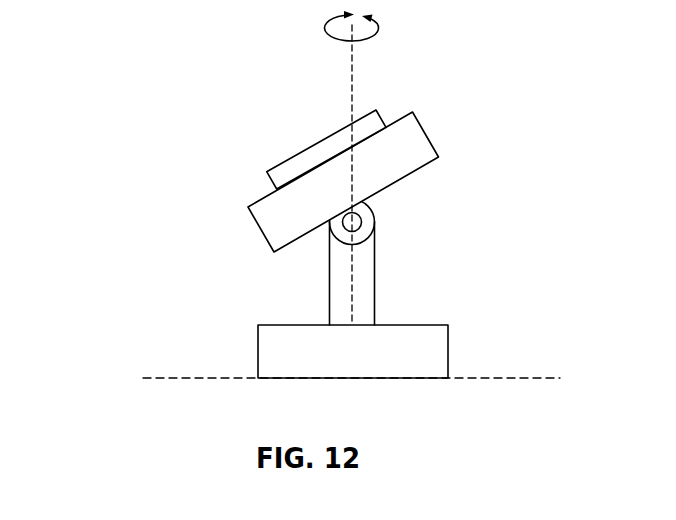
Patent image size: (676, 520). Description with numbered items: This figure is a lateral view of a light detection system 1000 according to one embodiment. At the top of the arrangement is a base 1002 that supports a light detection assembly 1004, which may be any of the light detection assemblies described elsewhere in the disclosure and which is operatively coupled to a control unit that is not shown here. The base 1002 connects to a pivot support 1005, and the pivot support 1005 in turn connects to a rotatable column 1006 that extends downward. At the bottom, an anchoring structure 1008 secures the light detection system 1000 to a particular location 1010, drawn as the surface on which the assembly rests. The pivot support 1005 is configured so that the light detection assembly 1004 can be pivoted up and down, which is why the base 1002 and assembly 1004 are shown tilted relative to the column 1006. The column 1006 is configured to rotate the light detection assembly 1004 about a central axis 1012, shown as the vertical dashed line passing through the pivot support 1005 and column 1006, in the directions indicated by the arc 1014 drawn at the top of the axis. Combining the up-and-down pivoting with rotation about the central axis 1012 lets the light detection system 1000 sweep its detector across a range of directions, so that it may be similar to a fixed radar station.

The light detection system 1000 is at (182, 93).
The base 1002 is at (425, 133).
The light detection assembly 1004 is at (290, 158).
The pivot support 1005 is at (362, 224).
The rotatable column 1006 is at (375, 285).
The anchoring structure 1008 is at (448, 352).
The particular location 1010 is at (158, 377).
The central axis 1012 is at (353, 70).
The arc 1014 is at (338, 38).